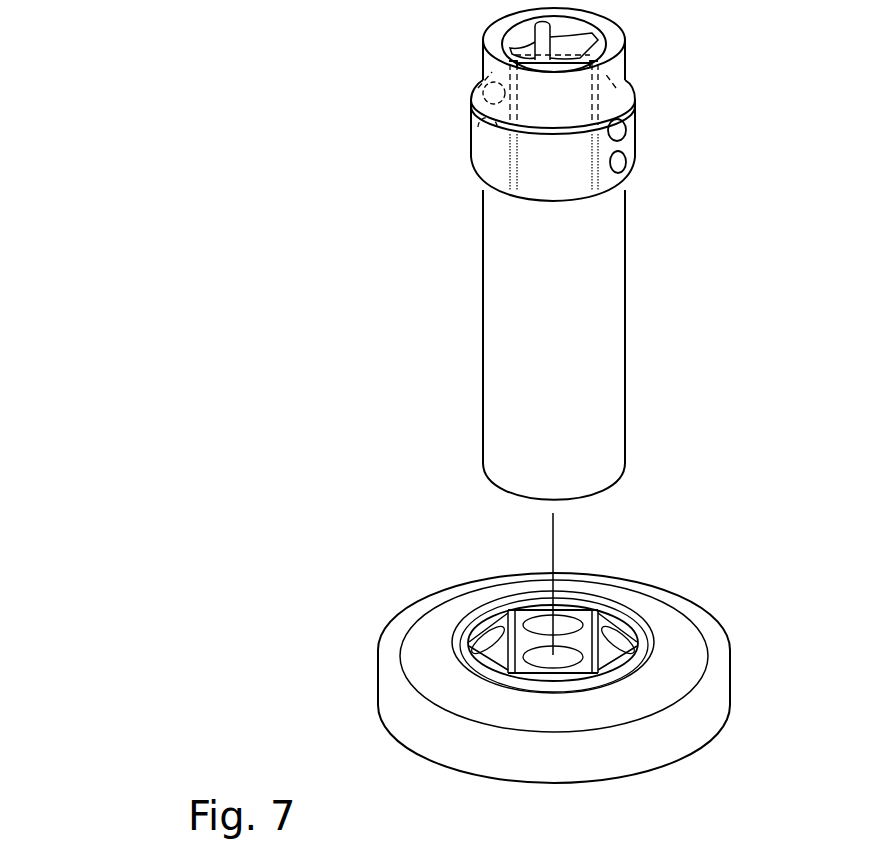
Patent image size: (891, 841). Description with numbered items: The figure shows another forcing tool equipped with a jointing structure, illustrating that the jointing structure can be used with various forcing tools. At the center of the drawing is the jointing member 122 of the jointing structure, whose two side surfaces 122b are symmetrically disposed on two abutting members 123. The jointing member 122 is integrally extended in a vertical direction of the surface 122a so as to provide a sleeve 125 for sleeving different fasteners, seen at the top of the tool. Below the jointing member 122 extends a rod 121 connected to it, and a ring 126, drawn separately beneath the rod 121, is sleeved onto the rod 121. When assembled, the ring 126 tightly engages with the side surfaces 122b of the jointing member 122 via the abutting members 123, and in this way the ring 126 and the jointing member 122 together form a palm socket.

The rod 121 is at (542, 331).
The jointing member 122 is at (678, 127).
The surface 122a is at (637, 84).
The side surfaces 122b is at (632, 128).
The abutting members 123 is at (478, 126).
The sleeve 125 is at (492, 62).
The ring 126 is at (715, 693).